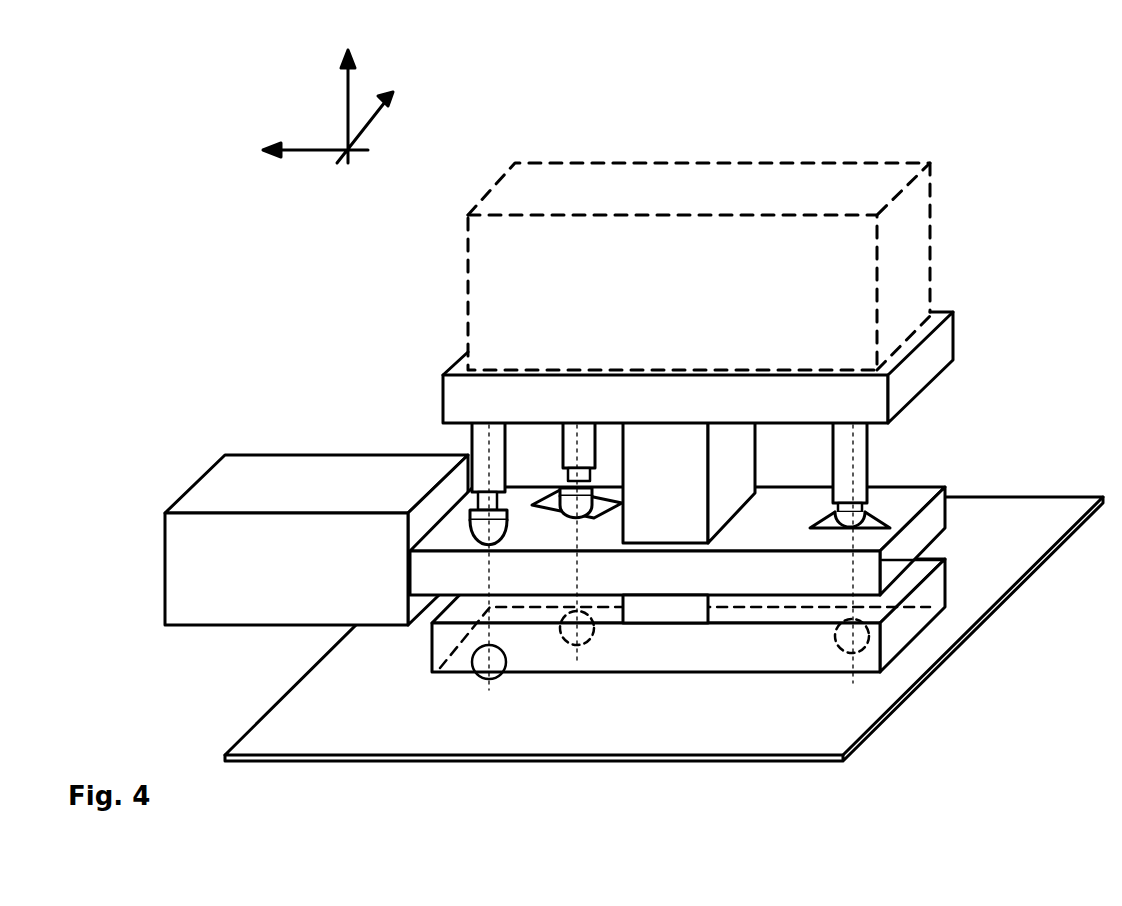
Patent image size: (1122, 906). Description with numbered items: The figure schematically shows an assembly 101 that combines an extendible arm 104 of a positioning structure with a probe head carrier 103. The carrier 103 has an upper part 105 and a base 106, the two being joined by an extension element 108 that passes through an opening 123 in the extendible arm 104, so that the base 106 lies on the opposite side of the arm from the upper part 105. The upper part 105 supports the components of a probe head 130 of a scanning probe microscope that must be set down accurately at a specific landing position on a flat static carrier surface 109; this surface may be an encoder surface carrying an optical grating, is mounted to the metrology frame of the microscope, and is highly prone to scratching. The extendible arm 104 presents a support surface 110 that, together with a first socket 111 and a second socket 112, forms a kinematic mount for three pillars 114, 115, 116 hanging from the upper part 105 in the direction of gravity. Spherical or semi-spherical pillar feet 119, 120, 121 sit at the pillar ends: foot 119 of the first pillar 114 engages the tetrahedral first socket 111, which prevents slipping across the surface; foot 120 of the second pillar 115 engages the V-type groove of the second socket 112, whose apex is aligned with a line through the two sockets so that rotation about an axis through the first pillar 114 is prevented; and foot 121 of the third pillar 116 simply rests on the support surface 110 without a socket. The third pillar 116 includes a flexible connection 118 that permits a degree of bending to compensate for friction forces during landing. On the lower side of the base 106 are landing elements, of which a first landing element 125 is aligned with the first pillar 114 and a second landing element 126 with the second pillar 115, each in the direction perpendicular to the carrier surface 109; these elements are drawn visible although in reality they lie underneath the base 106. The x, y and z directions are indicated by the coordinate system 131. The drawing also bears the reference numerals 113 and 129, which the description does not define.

The assembly 101 is at (1010, 138).
The probe head carrier 103 is at (455, 399).
The extendible arm 104 is at (268, 472).
The upper part 105 is at (953, 328).
The base 106 is at (948, 588).
The extension element 108 is at (756, 462).
The flat static carrier surface 109 is at (845, 738).
The support surface 110 is at (927, 490).
The first socket 111 is at (880, 510).
The second socket 112 is at (623, 517).
The leg neck 113 is at (564, 478).
The first pillar 114 is at (870, 443).
The second pillar 115 is at (560, 432).
The third pillar 116 is at (470, 443).
The flexible connection 118 is at (472, 522).
The pillar foot 119 is at (830, 512).
The pillar foot 120 is at (575, 505).
The pillar foot 121 is at (470, 547).
The opening 123 is at (732, 525).
The first landing element 125 is at (833, 642).
The second landing element 126 is at (583, 643).
The hole 129 is at (505, 677).
The probe head 130 is at (765, 162).
The coordinate system 131 is at (352, 158).